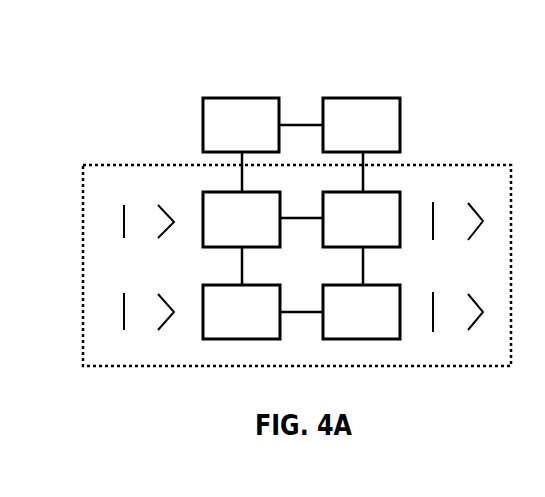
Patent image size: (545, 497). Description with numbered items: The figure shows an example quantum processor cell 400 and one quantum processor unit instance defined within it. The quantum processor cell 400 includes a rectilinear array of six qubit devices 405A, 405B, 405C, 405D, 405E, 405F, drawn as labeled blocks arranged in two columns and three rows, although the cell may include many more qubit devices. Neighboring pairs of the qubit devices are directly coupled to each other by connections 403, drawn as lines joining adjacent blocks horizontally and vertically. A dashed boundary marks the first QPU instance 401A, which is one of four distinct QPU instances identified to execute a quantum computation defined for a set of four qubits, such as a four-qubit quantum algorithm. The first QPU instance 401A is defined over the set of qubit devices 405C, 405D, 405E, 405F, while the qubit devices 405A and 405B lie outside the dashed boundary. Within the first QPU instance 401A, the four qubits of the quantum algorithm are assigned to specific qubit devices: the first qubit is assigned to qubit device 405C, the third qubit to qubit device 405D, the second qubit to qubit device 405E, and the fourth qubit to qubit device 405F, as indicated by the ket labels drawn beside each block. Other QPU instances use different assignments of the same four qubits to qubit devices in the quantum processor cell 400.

The quantum processor cell 400 is at (182, 60).
The first QPU instance 401A is at (188, 166).
The connections 403 is at (305, 125).
The qubit device 405A is at (267, 135).
The qubit device 405B is at (388, 135).
The qubit device 405C is at (267, 229).
The qubit device 405D is at (388, 229).
The qubit device 405E is at (267, 322).
The qubit device 405F is at (388, 322).